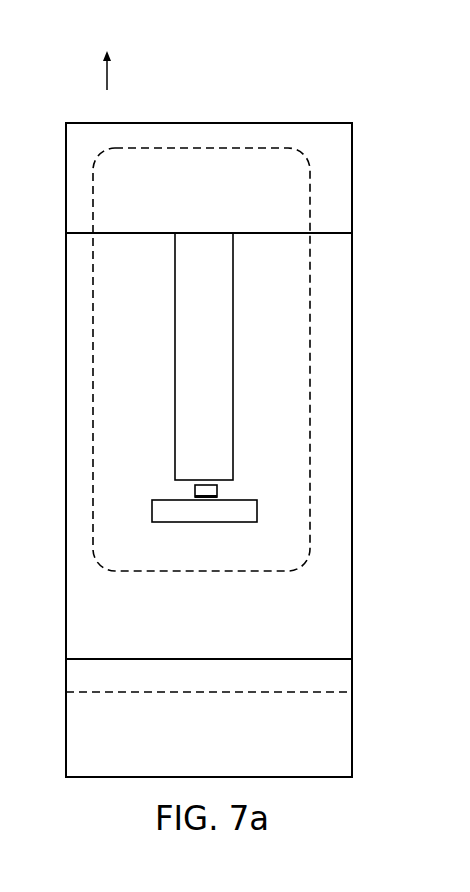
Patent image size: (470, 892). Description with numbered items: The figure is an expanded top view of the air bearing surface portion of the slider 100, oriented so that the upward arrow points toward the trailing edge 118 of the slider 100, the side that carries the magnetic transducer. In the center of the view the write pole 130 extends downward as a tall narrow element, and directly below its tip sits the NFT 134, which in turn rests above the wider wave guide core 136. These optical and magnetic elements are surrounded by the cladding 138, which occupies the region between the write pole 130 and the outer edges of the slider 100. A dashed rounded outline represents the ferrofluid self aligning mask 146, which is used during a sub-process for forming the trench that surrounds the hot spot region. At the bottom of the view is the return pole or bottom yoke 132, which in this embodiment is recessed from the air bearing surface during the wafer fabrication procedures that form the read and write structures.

The slider 100 is at (308, 95).
The trailing edge 118 is at (138, 55).
The write pole 130 is at (222, 287).
The return pole or bottom yoke 132 is at (347, 735).
The NFT 134 is at (217, 492).
The wave guide core 136 is at (245, 510).
The cladding 138 is at (333, 422).
The ferrofluid self aligning mask 146 is at (293, 178).